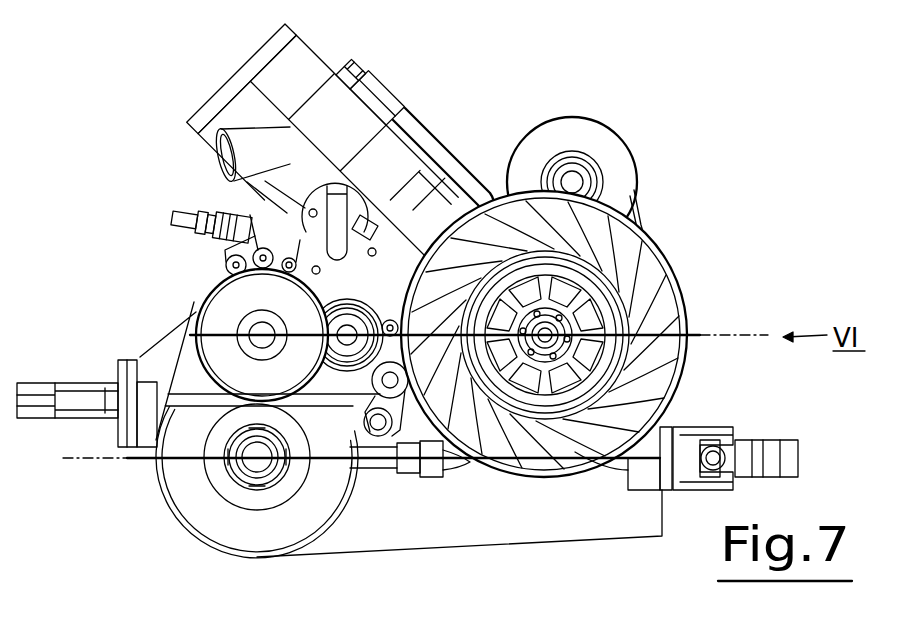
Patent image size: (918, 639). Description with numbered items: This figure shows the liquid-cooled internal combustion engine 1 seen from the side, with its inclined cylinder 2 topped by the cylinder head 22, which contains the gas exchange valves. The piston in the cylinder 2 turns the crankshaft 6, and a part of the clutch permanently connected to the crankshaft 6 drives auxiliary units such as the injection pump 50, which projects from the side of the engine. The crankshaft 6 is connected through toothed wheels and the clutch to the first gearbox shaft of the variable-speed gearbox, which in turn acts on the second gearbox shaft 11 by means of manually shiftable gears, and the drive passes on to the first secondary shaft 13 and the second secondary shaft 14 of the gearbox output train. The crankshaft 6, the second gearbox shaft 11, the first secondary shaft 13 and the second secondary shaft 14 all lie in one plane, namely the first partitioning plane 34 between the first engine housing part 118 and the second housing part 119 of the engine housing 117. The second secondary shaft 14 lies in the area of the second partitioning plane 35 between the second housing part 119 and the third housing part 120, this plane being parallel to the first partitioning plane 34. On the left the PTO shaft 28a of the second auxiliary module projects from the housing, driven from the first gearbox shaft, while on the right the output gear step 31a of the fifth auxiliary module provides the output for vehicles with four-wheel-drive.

The internal combustion engine 1 is at (482, 162).
The cylinder 2 is at (438, 134).
The crankshaft 6 is at (560, 318).
The second gearbox shaft 11 is at (345, 340).
The first secondary shaft 13 is at (250, 330).
The second secondary shaft 14 is at (254, 460).
The cylinder head 22 is at (375, 90).
The PTO shaft 28a is at (40, 390).
The output gear step 31a is at (795, 458).
The first partitioning plane 34 is at (732, 327).
The second partitioning plane 35 is at (117, 466).
The injection pump 50 is at (173, 213).
The engine housing 117 is at (596, 310).
The first engine housing part 118 is at (687, 293).
The second housing part 119 is at (690, 367).
The third housing part 120 is at (468, 546).